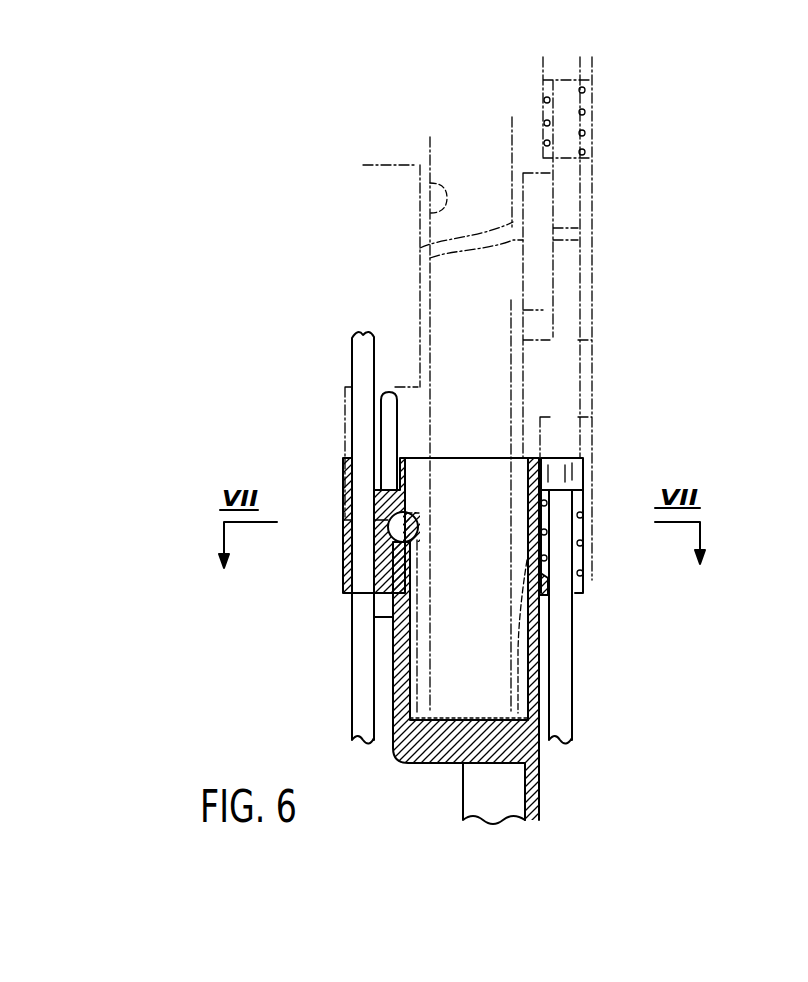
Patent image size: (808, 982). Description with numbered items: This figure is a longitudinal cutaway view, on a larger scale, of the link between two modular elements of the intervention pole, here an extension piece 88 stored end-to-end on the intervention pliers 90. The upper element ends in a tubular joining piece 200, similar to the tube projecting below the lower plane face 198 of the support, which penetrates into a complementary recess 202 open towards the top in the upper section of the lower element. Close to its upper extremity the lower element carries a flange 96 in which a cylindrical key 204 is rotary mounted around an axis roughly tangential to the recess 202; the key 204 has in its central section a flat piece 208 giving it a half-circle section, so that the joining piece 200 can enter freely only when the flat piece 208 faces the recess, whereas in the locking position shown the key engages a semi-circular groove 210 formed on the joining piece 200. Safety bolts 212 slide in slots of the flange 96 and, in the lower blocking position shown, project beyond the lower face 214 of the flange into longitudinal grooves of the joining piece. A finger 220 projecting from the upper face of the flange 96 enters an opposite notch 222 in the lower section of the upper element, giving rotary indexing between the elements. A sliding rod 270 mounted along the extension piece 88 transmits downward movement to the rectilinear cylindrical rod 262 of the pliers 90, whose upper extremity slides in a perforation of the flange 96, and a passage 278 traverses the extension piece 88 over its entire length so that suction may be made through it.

The flange 96 is at (363, 167).
The passage 278 is at (433, 217).
The sliding rod 270 is at (578, 205).
The extension piece 88 is at (527, 310).
The finger 220 is at (373, 420).
The notch 222 is at (385, 390).
The lower plane face 198 is at (445, 463).
The cylindrical key 204 is at (412, 513).
The flat piece 208 is at (383, 520).
The groove 210 is at (412, 543).
The safety bolt 212 is at (378, 608).
The recess 202 is at (410, 632).
The tubular joining piece 200 is at (517, 647).
The lower face 214 is at (580, 593).
The rectilinear cylindrical rod 262 is at (563, 700).
The intervention pliers 90 is at (548, 787).